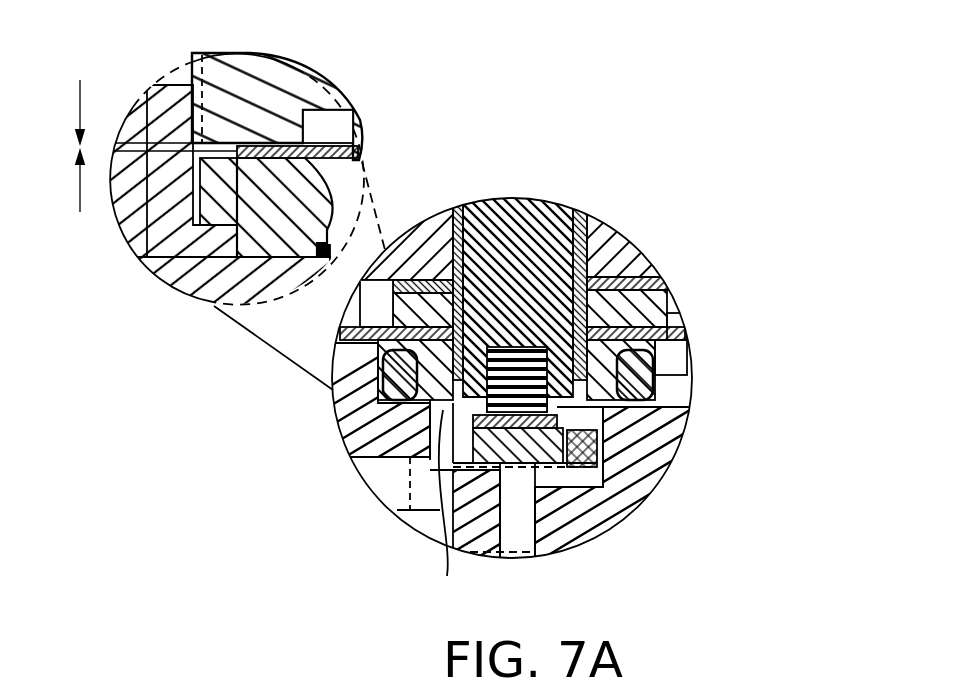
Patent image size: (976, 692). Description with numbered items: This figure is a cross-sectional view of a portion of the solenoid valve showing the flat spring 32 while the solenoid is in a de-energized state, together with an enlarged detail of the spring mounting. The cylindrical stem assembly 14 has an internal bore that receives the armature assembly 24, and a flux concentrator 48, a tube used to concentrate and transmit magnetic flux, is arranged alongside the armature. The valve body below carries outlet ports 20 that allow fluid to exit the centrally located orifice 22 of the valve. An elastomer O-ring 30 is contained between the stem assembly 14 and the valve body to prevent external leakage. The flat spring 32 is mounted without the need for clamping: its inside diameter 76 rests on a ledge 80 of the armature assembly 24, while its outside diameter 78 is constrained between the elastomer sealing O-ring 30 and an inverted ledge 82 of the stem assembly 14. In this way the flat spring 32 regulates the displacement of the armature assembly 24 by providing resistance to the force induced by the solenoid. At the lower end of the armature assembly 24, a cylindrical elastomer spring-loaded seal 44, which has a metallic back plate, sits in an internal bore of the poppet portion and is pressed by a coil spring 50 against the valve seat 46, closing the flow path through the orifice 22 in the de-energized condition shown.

The stem assembly 14 is at (668, 312).
The outlet ports 20 is at (397, 478).
The orifice 22 is at (643, 480).
The armature assembly 24 is at (550, 206).
The O-ring 30 is at (677, 390).
The flat spring 32 is at (680, 335).
The spring-loaded seal 44 is at (620, 437).
The valve seat 46 is at (537, 477).
The flux concentrator 48 is at (592, 216).
The coil spring 50 is at (545, 337).
The inside diameter 76 is at (426, 512).
The outside diameter 78 is at (387, 400).
The ledge 80 is at (683, 415).
The inverted ledge 82 is at (687, 357).